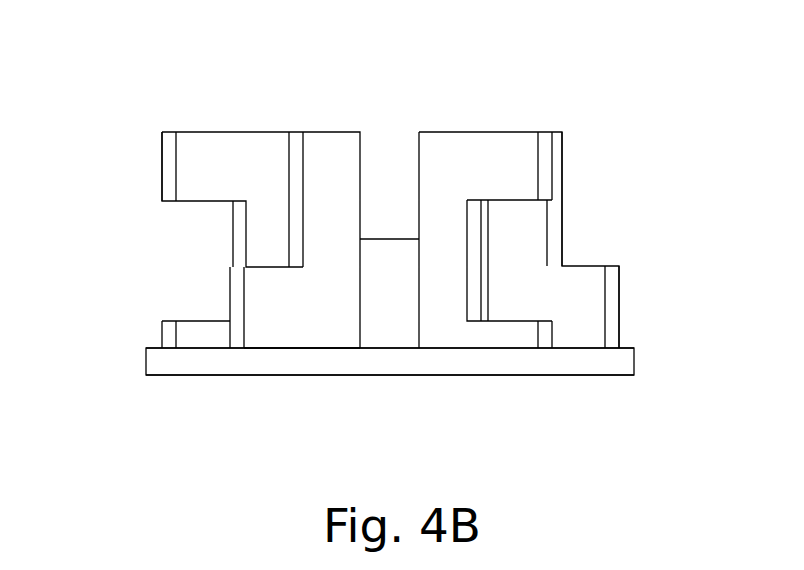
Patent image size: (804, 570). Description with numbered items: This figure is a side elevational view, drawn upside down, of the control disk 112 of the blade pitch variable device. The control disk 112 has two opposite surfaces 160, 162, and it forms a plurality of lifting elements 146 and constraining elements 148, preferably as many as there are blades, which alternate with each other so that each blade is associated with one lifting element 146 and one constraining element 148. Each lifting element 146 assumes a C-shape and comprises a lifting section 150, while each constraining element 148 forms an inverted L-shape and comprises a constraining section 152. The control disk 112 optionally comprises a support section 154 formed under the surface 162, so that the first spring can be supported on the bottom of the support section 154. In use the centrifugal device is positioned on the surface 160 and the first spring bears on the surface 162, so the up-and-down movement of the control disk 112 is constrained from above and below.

The control disk 112 is at (627, 363).
The lifting element 146 is at (220, 131).
The constraining element 148 is at (332, 131).
The lifting section 150 is at (188, 166).
The constraining section 152 is at (307, 333).
The support section 154 is at (392, 248).
The surface 160 is at (203, 376).
The surface 162 is at (157, 348).